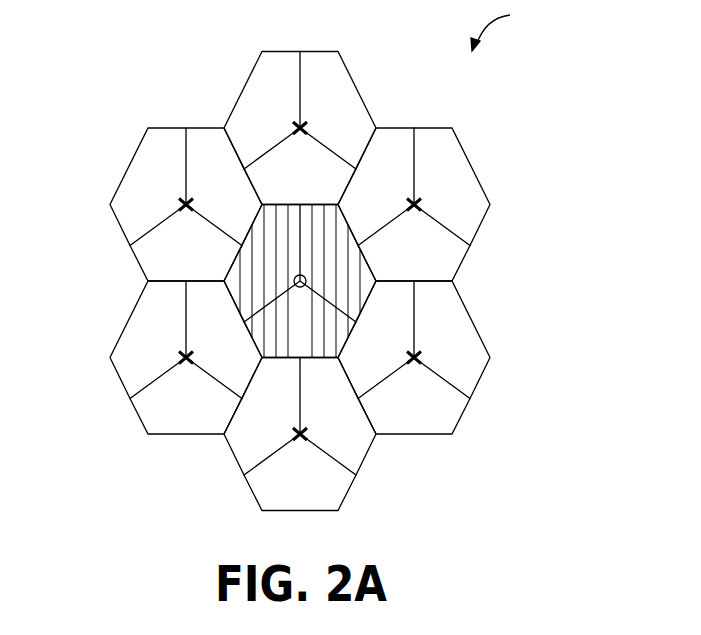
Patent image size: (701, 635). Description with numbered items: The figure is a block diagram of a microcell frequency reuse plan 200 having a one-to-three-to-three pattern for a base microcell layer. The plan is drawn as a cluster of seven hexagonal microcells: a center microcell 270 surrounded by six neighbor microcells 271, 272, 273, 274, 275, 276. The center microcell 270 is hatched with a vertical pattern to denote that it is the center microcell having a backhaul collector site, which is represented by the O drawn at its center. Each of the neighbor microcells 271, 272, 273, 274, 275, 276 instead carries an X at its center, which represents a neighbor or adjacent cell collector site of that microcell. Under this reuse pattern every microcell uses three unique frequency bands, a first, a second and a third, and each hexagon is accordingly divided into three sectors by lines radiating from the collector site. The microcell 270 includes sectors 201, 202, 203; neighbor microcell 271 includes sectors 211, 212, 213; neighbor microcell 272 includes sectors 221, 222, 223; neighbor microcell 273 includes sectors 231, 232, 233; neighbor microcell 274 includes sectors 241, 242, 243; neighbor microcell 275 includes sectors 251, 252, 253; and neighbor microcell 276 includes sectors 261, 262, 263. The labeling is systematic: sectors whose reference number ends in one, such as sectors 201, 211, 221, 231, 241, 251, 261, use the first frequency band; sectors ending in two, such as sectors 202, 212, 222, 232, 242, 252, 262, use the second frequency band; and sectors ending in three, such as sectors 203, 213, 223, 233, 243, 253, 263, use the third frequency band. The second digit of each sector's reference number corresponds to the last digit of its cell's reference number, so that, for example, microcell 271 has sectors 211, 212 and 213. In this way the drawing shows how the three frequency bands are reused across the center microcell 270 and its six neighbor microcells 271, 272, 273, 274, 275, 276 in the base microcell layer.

The microcell frequency reuse plan 200 is at (520, 25).
The sector 201 is at (262, 264).
The sector 202 is at (338, 264).
The sector 203 is at (300, 334).
The sector 211 is at (262, 111).
The sector 212 is at (338, 111).
The sector 213 is at (300, 180).
The sector 221 is at (376, 187).
The sector 222 is at (452, 187).
The sector 223 is at (414, 256).
The sector 231 is at (376, 340).
The sector 232 is at (452, 340).
The sector 233 is at (414, 408).
The sector 241 is at (262, 417).
The sector 242 is at (338, 417).
The sector 243 is at (300, 485).
The sector 251 is at (148, 340).
The sector 252 is at (224, 340).
The sector 253 is at (186, 413).
The sector 261 is at (148, 187).
The sector 262 is at (224, 187).
The sector 263 is at (186, 258).
The microcell 270 is at (405, 281).
The neighbor microcell 271 is at (320, 112).
The neighbor microcell 272 is at (424, 188).
The neighbor microcell 273 is at (458, 357).
The neighbor microcell 274 is at (264, 434).
The neighbor microcell 275 is at (144, 357).
The neighbor microcell 276 is at (166, 186).